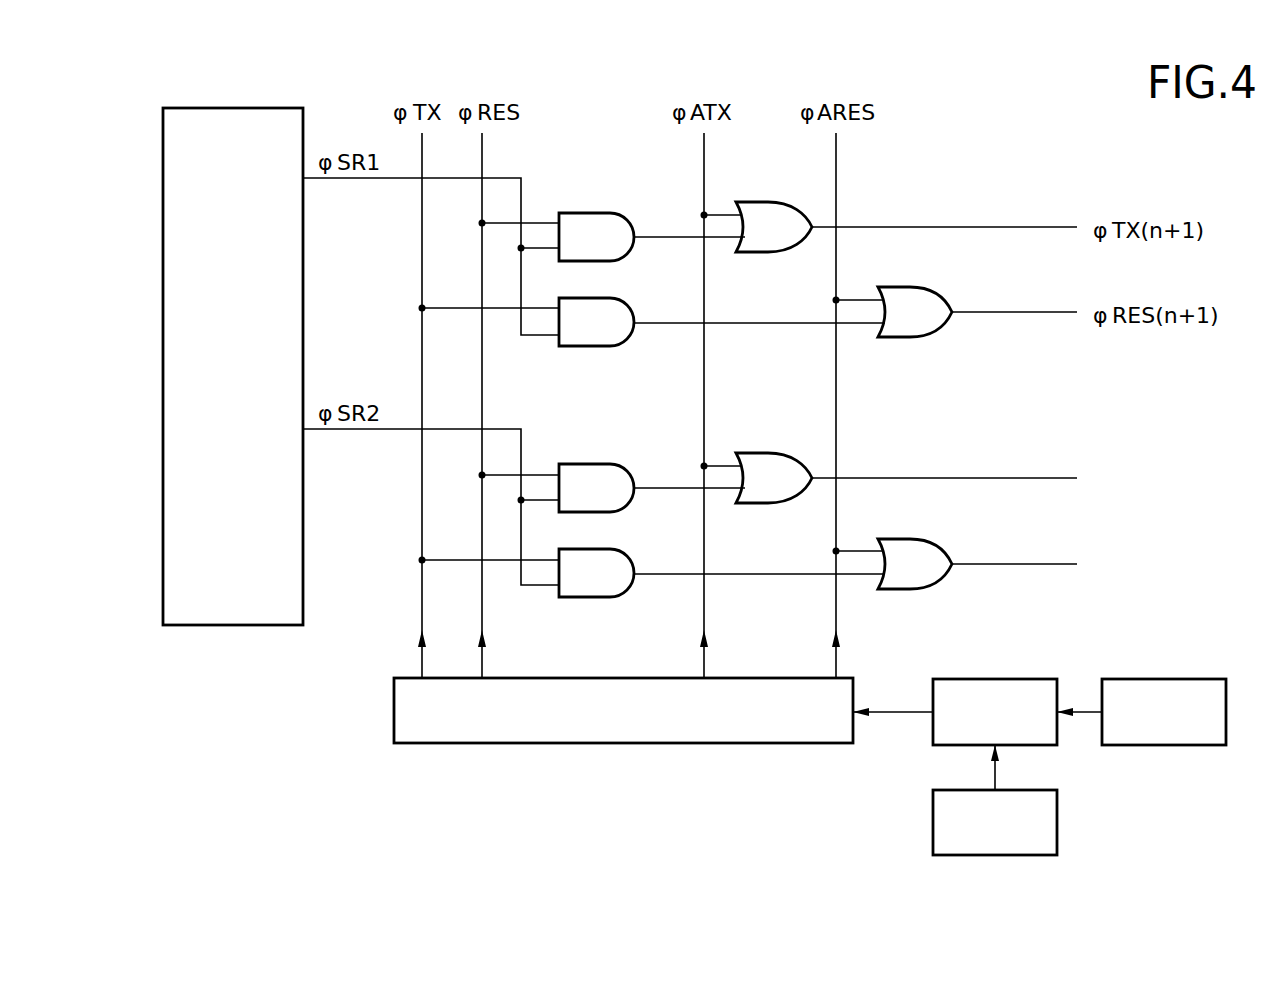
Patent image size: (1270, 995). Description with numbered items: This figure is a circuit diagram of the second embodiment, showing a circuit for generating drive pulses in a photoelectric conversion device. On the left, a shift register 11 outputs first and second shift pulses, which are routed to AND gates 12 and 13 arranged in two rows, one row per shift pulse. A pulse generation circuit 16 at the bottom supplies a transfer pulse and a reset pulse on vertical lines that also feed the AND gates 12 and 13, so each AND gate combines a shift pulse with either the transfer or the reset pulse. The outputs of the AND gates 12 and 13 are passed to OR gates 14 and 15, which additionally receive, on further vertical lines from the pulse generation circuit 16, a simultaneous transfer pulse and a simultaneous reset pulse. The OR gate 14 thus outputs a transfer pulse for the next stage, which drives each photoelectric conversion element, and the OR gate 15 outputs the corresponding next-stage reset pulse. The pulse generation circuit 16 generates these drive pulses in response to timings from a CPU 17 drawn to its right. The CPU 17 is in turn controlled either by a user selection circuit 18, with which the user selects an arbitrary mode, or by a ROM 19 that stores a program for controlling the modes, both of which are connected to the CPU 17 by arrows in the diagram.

The shift register 11 is at (236, 627).
The AND gate 12 is at (590, 212).
The AND gate 13 is at (590, 348).
The OR gate 14 is at (765, 200).
The OR gate 15 is at (908, 339).
The pulse generation circuit 16 is at (458, 745).
The CPU 17 is at (1020, 678).
The user selection circuit 18 is at (1058, 827).
The ROM 19 is at (1198, 678).